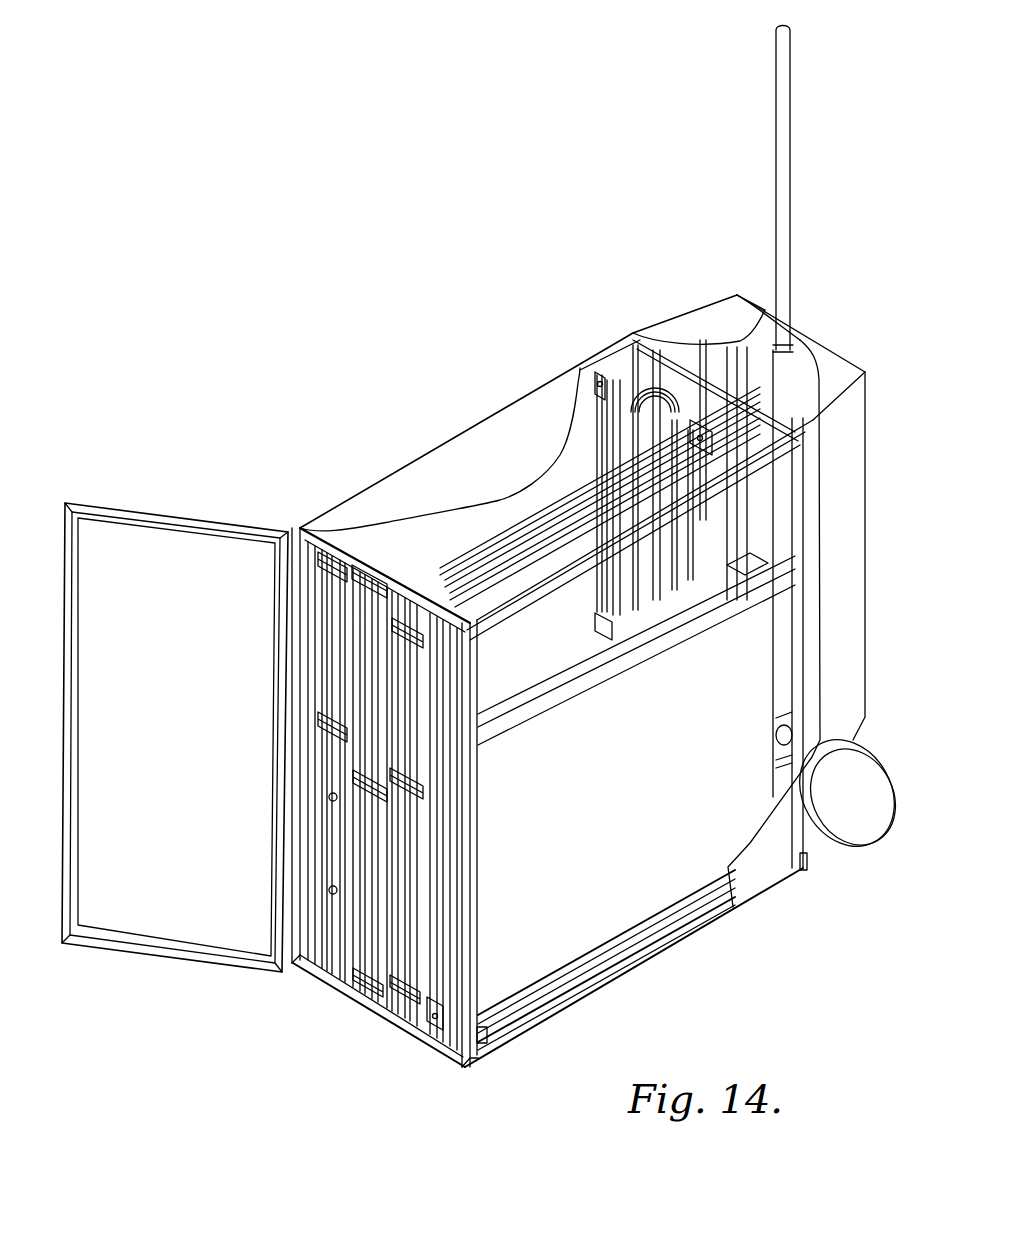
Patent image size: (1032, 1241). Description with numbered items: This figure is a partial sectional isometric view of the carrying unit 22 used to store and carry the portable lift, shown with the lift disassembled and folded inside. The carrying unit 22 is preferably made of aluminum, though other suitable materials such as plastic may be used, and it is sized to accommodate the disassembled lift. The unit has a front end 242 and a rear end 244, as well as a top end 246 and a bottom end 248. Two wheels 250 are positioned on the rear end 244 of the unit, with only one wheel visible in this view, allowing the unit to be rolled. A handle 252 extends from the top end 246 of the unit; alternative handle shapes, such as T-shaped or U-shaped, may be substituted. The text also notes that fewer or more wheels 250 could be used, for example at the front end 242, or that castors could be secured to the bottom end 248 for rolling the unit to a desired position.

The carrying unit 22 is at (527, 375).
The front end 242 is at (385, 1032).
The rear end 244 is at (874, 406).
The top end 246 is at (393, 456).
The bottom end 248 is at (656, 969).
The wheels 250 is at (852, 818).
The handle 252 is at (792, 120).